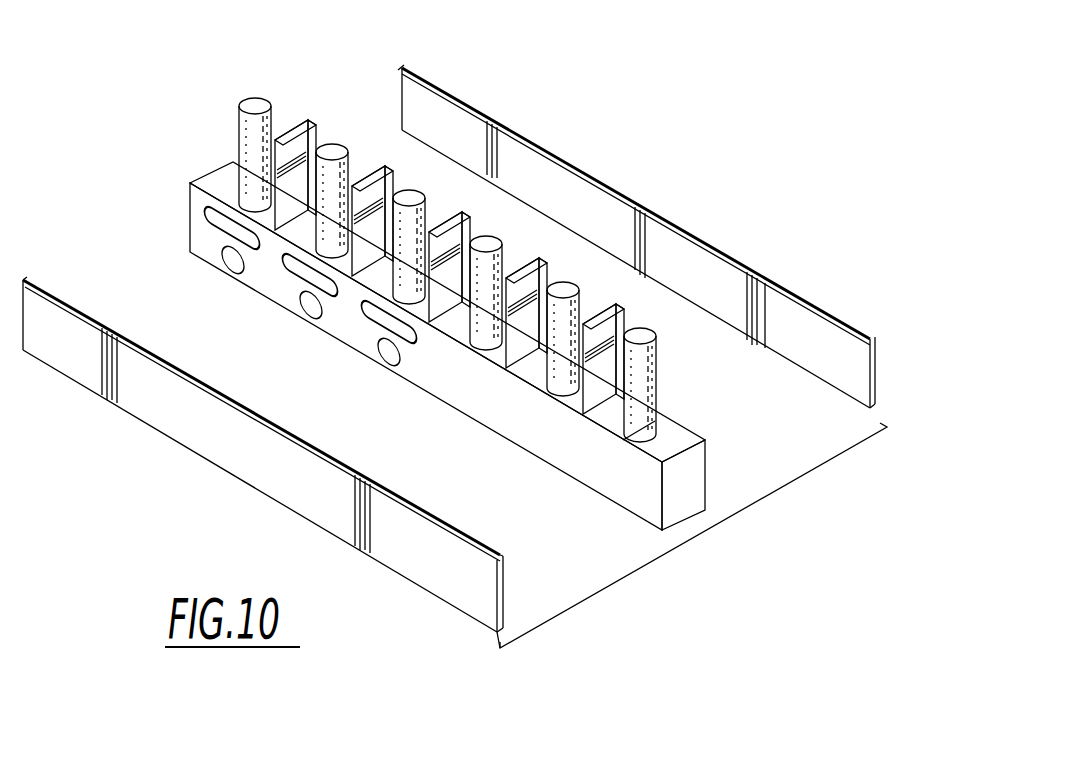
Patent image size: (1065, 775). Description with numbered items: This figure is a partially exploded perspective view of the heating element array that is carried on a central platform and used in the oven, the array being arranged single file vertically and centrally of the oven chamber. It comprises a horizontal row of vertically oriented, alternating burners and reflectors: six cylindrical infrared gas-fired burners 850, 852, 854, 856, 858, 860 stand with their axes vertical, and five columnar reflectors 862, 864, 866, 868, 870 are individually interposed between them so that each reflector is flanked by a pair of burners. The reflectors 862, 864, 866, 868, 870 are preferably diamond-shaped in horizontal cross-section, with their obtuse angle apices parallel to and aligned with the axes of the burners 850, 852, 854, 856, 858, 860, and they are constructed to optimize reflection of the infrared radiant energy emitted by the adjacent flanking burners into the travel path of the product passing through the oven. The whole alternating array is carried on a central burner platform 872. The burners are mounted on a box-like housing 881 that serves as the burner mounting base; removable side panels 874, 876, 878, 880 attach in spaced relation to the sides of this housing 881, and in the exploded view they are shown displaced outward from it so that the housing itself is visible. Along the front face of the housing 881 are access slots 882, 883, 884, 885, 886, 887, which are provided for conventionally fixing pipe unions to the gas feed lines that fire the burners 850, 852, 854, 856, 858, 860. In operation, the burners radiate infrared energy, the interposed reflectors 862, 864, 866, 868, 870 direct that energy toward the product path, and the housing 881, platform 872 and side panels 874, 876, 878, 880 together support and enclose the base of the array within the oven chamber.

The burner 850 is at (243, 97).
The burner 852 is at (332, 144).
The burner 854 is at (420, 190).
The burner 856 is at (497, 238).
The burner 858 is at (577, 286).
The burner 860 is at (650, 328).
The reflector 862 is at (283, 125).
The reflector 864 is at (362, 186).
The reflector 866 is at (455, 222).
The reflector 868 is at (540, 268).
The reflector 870 is at (612, 302).
The central burner platform 872 is at (698, 545).
The removable side panel 874 is at (263, 454).
The removable side panel 876 is at (327, 515).
The removable side panel 878 is at (640, 209).
The removable side panel 880 is at (418, 66).
The box-like housing 881 is at (688, 440).
The access slot 882 is at (218, 223).
The access slot 883 is at (225, 262).
The access slot 884 is at (288, 272).
The access slot 885 is at (307, 314).
The access slot 886 is at (368, 315).
The access slot 887 is at (386, 356).